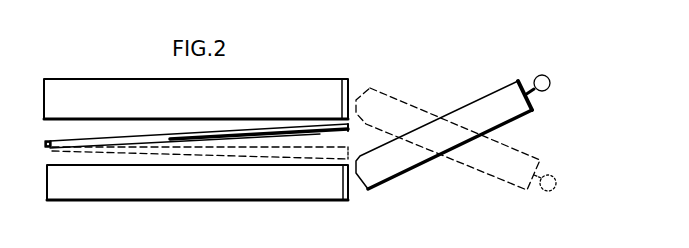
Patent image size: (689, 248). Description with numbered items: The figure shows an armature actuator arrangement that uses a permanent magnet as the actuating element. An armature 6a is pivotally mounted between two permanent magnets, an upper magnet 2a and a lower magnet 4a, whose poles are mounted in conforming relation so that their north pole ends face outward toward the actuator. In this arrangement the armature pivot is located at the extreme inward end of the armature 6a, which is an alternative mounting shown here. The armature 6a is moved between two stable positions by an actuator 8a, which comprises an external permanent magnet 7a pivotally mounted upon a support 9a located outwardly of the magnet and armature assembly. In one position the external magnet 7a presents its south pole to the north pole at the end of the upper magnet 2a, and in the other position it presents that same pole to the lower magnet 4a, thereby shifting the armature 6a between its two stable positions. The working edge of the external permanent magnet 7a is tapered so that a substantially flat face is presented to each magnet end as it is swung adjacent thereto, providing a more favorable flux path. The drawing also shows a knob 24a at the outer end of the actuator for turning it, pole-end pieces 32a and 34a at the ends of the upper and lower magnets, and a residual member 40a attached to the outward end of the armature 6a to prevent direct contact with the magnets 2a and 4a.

The upper permanent magnet 2a is at (196, 99).
The lower permanent magnet 4a is at (197, 182).
The armature 6a is at (77, 141).
The external permanent magnet 7a is at (471, 103).
The actuator 8a is at (528, 112).
The support 9a is at (446, 141).
The actuating knob 24a is at (549, 88).
The upper pole piece 32a is at (349, 78).
The lower pole piece 34a is at (349, 200).
The armature contact strip 40a is at (230, 130).